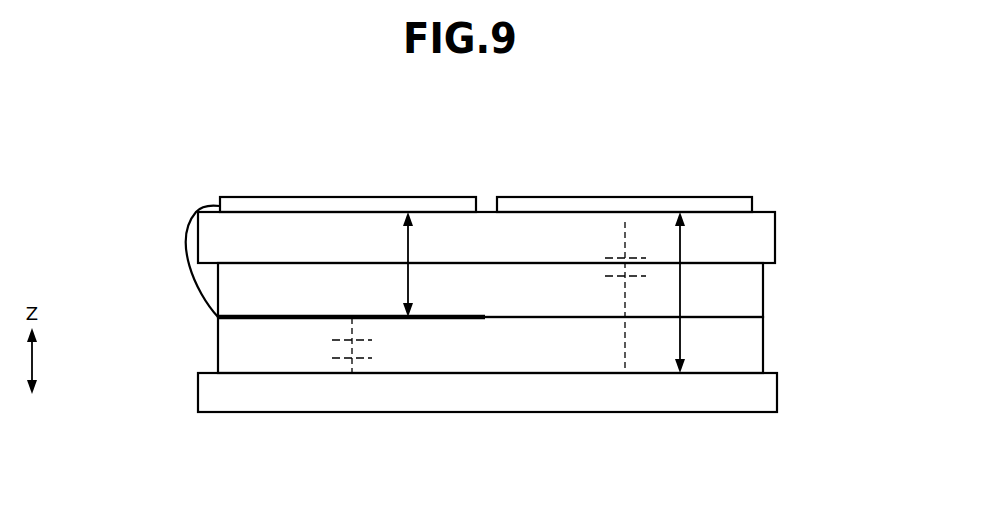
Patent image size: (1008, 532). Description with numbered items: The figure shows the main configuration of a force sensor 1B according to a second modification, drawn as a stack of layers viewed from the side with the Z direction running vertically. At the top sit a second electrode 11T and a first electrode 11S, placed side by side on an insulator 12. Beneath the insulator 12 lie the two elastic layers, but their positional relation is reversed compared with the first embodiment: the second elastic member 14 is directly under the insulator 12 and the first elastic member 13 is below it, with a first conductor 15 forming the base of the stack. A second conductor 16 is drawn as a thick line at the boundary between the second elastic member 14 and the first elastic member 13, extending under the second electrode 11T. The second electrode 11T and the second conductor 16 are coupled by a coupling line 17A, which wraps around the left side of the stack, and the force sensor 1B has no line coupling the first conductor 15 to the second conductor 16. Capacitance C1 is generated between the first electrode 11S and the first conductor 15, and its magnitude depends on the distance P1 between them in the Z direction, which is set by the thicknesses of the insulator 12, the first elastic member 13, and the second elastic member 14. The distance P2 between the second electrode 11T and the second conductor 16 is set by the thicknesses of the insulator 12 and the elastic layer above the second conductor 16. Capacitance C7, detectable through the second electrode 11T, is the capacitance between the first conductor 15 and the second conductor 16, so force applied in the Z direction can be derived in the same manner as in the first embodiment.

The force sensor 1B is at (180, 158).
The second electrode 11T is at (443, 196).
The first electrode 11S is at (718, 196).
The insulator 12 is at (762, 236).
The first elastic member 13 is at (757, 346).
The second elastic member 14 is at (757, 290).
The first conductor 15 is at (764, 393).
The second conductor 16 is at (243, 317).
The coupling line 17A is at (181, 236).
The capacitance C1 is at (625, 224).
The capacitance C7 is at (352, 360).
The distance P1 is at (691, 292).
The distance P2 is at (419, 264).